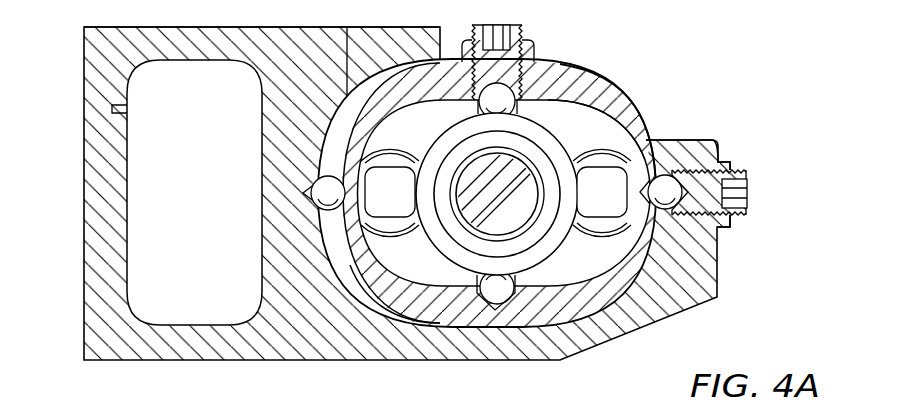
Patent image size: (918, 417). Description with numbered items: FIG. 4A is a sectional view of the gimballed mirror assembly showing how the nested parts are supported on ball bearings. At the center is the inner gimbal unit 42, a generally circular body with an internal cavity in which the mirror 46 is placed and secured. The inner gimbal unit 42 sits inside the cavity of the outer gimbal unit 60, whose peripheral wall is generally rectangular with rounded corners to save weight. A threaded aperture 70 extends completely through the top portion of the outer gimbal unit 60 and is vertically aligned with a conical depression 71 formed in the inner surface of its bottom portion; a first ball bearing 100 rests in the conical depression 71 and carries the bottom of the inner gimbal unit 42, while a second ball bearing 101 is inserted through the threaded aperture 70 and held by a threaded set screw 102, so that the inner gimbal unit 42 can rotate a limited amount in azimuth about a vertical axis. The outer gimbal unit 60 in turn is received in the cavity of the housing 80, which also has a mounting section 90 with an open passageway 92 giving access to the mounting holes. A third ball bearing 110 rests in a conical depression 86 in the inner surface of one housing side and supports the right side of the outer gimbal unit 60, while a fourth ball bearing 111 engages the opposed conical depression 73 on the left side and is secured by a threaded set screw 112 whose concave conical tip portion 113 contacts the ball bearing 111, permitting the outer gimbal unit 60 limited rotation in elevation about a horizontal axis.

The inner gimbal unit 42 is at (660, 303).
The mirror 46 is at (517, 210).
The outer gimbal unit 60 is at (402, 300).
The threaded aperture 70 is at (534, 62).
The conical depression 71 is at (487, 297).
The conical depression 73 is at (657, 170).
The housing 80 is at (313, 27).
The conical depression 86 is at (318, 198).
The mounting section 90 is at (203, 27).
The open passageway 92 is at (150, 178).
The first ball bearing 100 is at (502, 290).
The second ball bearing 101 is at (593, 100).
The threaded set screw 102 is at (518, 33).
The third ball bearing 110 is at (310, 200).
The fourth ball bearing 111 is at (667, 185).
The threaded set screw 112 is at (748, 176).
The concave conical tip portion 113 is at (733, 222).